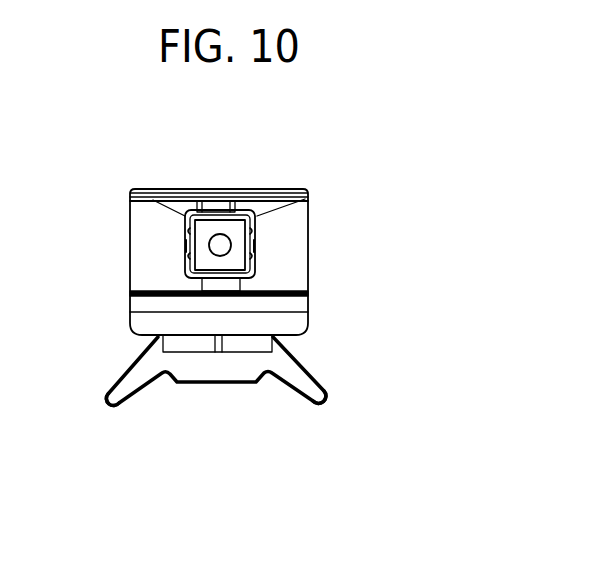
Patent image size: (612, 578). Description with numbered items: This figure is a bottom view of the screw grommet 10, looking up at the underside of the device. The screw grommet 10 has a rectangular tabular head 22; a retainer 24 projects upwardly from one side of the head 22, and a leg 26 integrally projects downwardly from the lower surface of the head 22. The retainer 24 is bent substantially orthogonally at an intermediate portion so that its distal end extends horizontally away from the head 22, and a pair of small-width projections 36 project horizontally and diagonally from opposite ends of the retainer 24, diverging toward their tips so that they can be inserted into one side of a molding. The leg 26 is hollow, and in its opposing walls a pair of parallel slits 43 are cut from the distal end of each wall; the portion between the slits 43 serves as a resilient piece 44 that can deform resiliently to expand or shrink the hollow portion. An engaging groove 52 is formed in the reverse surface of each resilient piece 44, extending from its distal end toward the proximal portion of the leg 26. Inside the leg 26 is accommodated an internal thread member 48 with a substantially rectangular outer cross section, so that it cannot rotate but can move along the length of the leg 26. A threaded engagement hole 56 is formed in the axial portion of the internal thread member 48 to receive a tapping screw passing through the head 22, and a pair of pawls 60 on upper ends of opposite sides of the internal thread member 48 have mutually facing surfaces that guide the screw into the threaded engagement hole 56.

The screw grommet 10 is at (420, 297).
The head 22 is at (293, 242).
The retainer 24 is at (215, 373).
The leg 26 is at (255, 218).
The projections 36 is at (127, 383).
The slits 43 is at (150, 197).
The resilient piece 44 is at (185, 230).
The internal thread member 48 is at (235, 222).
The engaging groove 52 is at (187, 247).
The threaded engagement hole 56 is at (218, 237).
The pawls 60 is at (218, 207).